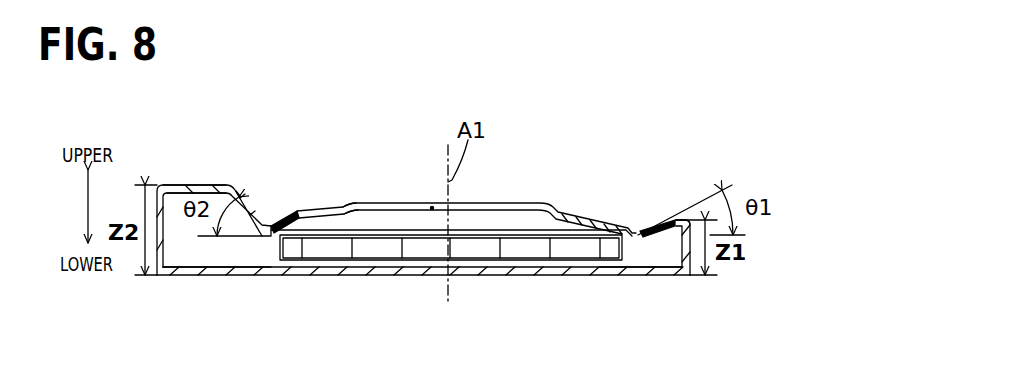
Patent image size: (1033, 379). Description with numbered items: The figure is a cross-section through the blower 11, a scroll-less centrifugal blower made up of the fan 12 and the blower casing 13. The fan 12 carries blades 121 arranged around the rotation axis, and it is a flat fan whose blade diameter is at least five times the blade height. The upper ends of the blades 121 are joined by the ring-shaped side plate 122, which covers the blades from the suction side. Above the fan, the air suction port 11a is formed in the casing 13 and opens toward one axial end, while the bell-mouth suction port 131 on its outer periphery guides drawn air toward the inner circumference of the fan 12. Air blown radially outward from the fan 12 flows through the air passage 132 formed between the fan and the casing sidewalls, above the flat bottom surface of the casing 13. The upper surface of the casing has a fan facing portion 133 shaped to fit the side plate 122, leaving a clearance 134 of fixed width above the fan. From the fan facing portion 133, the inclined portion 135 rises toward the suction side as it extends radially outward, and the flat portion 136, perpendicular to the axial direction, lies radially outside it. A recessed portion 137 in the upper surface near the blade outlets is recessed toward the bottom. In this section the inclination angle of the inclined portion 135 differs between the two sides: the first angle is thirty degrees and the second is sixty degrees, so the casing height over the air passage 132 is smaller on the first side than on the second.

The blower 11 is at (162, 170).
The air suction port 11a is at (432, 206).
The fan 12 is at (527, 213).
The blower casing 13 is at (173, 278).
The blades 121 is at (365, 248).
The side plate 122 is at (511, 228).
The suction port 131 is at (363, 203).
The air passage 132 is at (213, 243).
The fan facing portion 133 is at (326, 225).
The clearance 134 is at (294, 212).
The inclined portion 135 is at (266, 226).
The flat portion 136 is at (208, 185).
The recessed portion 137 is at (260, 213).